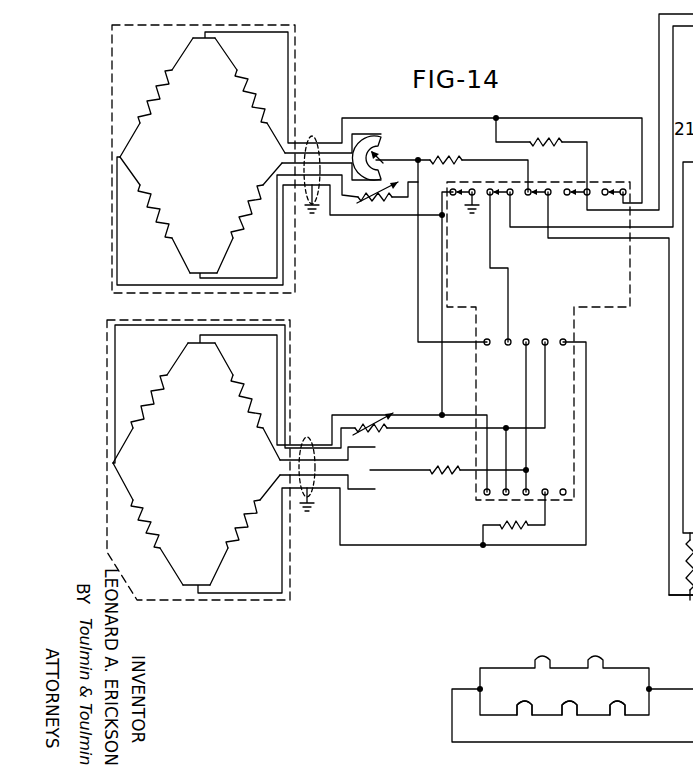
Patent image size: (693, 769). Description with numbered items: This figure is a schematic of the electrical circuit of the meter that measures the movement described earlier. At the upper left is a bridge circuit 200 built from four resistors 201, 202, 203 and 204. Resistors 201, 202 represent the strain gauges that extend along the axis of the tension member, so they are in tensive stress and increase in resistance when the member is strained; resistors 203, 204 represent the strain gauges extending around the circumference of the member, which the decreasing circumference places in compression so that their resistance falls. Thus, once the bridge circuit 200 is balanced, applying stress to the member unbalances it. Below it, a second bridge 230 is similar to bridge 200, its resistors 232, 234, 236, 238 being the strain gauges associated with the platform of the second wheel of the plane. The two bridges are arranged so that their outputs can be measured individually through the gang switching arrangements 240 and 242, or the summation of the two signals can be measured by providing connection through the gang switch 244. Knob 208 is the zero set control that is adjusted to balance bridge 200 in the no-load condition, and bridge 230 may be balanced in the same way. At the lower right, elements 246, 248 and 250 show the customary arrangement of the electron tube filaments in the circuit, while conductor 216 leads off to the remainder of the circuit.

The bridge circuit 200 is at (310, 60).
The resistor 201 is at (152, 110).
The resistor 202 is at (248, 208).
The resistor 203 is at (158, 212).
The resistor 204 is at (252, 100).
The knob 208 is at (389, 132).
The gang switching arrangement 240 is at (608, 188).
The gang switch 244 is at (566, 340).
The gang switching arrangement 242 is at (568, 496).
The bridge 230 is at (98, 506).
The resistor 232 is at (150, 408).
The resistor 234 is at (250, 522).
The resistor 236 is at (166, 512).
The resistor 238 is at (246, 405).
The electron tube filament 250 is at (597, 659).
The electron tube filament 246 is at (570, 710).
The electron tube filament 248 is at (617, 708).
The conductor 216 is at (690, 606).